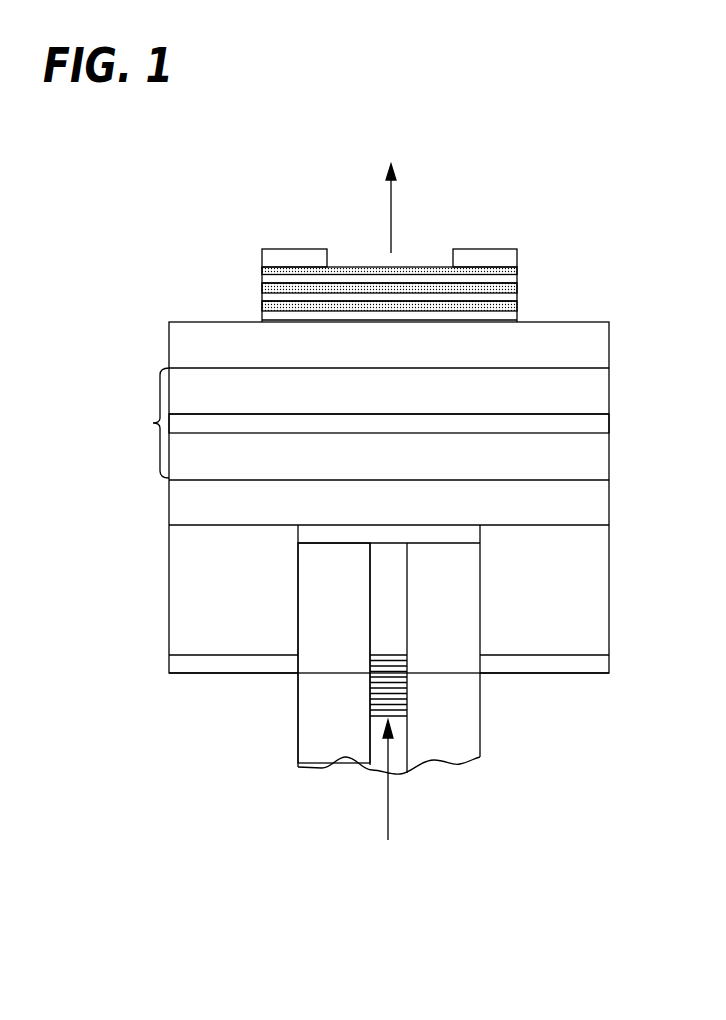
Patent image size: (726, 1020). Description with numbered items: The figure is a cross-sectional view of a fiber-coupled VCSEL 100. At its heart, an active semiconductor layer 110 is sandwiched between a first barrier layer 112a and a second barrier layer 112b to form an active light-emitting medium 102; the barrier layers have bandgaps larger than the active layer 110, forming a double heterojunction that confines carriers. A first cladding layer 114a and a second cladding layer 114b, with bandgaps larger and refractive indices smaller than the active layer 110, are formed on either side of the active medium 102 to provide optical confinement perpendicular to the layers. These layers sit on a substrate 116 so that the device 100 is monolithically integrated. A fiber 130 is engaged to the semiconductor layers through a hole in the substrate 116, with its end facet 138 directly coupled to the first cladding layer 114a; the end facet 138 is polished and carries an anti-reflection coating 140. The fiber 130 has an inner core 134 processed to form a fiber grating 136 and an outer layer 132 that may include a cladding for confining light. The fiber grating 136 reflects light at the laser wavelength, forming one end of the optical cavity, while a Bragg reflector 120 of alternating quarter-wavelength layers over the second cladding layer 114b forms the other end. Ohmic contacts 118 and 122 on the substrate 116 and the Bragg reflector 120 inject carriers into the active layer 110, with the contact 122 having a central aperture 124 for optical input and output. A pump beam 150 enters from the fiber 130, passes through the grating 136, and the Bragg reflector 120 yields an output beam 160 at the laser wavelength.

The fiber-coupled VCSEL 100 is at (127, 180).
The active light-emitting medium 102 is at (139, 423).
The active semiconductor layer 110 is at (609, 425).
The first barrier layer 112a is at (610, 448).
The second barrier layer 112b is at (609, 387).
The first cladding layer 114a is at (610, 492).
The second cladding layer 114b is at (609, 352).
The substrate 116 is at (610, 555).
The ohmic contact 118 is at (190, 675).
The Bragg reflector 120 is at (262, 267).
The ohmic contact 122 is at (285, 248).
The central aperture 124 is at (432, 252).
The fiber 130 is at (340, 780).
The outer layer 132 is at (297, 738).
The inner core 134 is at (408, 602).
The fiber grating 136 is at (408, 689).
The end facet 138 is at (350, 546).
The anti-reflection coating 140 is at (298, 532).
The pump beam 150 is at (392, 797).
The output beam 160 is at (390, 196).